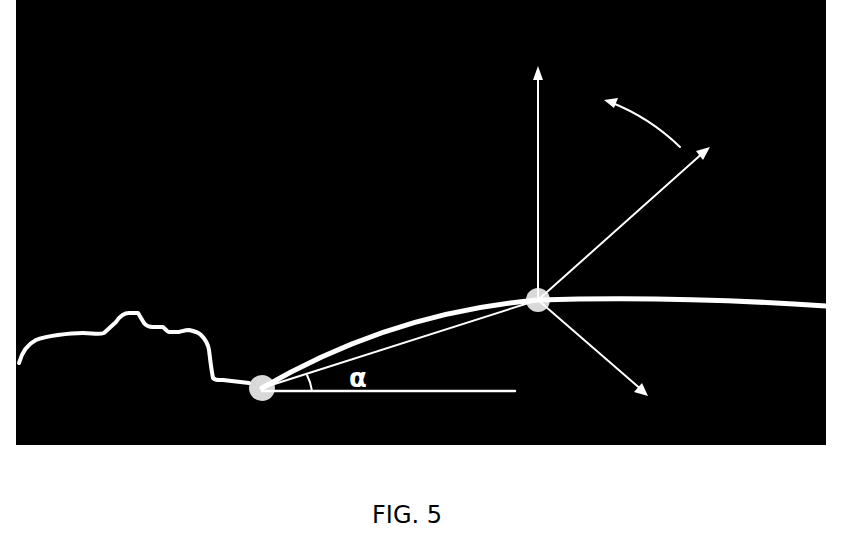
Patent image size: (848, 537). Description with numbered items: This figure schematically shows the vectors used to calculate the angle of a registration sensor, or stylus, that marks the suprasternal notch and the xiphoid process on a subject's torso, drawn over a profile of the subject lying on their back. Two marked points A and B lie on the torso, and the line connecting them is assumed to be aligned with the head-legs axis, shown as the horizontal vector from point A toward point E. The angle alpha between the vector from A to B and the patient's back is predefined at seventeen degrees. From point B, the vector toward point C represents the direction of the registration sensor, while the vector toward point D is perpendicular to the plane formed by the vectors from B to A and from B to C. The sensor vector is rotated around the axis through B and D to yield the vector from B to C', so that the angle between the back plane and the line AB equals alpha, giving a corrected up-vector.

The marked point A is at (262, 370).
The marked point B is at (527, 291).
The registration sensor direction endpoint C is at (634, 214).
The corrected up-vector endpoint C' is at (520, 159).
The perpendicular vector endpoint D is at (609, 360).
The head-legs axis endpoint E is at (394, 408).